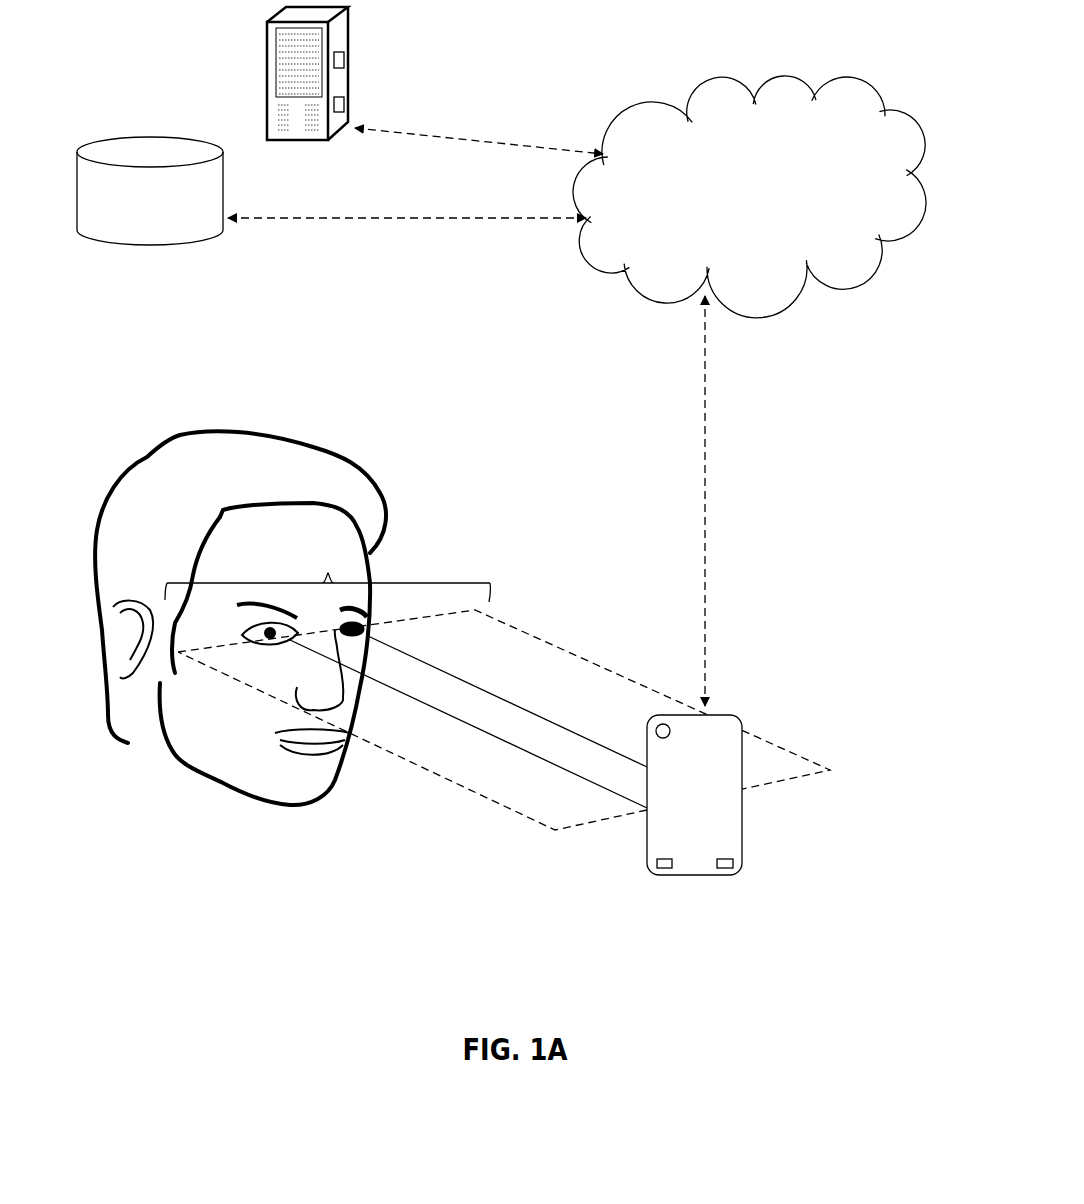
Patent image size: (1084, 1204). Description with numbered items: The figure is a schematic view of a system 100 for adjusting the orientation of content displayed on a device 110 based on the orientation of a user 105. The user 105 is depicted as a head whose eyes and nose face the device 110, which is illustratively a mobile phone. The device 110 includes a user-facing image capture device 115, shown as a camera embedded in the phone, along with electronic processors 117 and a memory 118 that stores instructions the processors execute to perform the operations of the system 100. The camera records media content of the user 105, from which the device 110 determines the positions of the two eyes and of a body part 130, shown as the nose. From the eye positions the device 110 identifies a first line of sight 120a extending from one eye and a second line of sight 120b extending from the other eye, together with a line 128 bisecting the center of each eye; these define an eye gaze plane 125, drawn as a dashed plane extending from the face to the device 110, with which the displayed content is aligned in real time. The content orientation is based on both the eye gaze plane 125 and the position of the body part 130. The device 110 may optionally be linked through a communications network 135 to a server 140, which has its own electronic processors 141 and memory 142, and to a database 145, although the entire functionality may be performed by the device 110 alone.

The system 100 is at (500, 914).
The user 105 is at (240, 708).
The device 110 is at (697, 880).
The image capture device 115 is at (664, 724).
The electronic processors 117 is at (663, 875).
The memory 118 is at (725, 875).
The first line of sight 120a is at (539, 760).
The second line of sight 120b is at (541, 715).
The eye gaze plane 125 is at (827, 775).
The line 128 is at (410, 580).
The body part 130 is at (320, 690).
The communications network 135 is at (749, 197).
The server 140 is at (310, 142).
The electronic processors 141 is at (345, 103).
The memory 142 is at (345, 59).
The database 145 is at (150, 245).